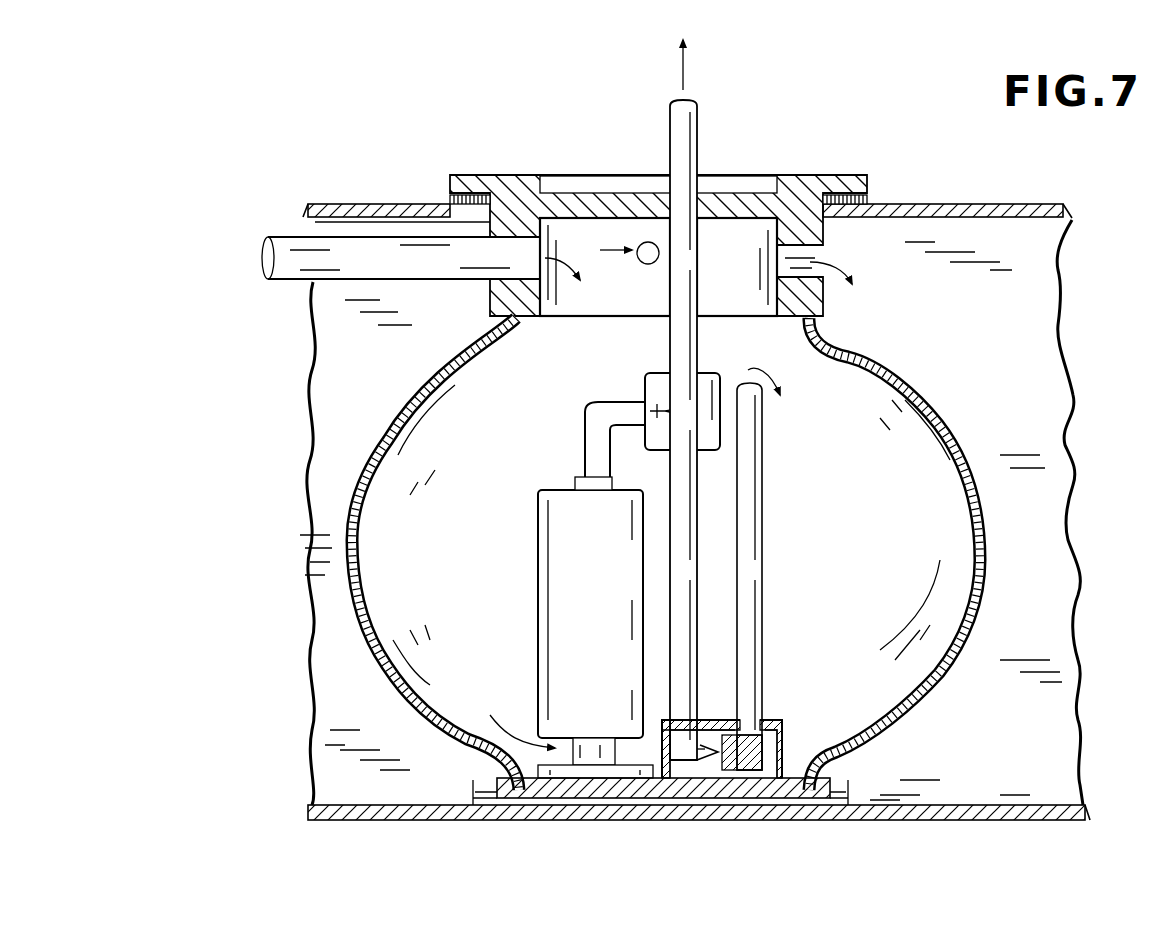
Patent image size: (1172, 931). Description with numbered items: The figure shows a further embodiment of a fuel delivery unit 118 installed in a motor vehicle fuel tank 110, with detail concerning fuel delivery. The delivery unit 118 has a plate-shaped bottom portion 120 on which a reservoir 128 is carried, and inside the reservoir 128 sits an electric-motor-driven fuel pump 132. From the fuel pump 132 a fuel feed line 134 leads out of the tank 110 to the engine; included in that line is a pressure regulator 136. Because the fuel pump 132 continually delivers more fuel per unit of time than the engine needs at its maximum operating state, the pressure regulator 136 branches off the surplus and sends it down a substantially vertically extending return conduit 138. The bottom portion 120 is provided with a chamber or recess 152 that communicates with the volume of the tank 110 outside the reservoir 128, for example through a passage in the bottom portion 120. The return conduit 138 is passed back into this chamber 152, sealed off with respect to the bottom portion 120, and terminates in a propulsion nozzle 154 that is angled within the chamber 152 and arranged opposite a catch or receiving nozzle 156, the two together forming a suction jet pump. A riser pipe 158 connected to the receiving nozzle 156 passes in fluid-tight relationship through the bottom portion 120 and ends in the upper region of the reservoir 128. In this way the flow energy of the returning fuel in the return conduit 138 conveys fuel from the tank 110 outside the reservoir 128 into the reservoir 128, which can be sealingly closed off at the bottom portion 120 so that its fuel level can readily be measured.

The tank 110 is at (365, 196).
The delivery unit 118 is at (378, 690).
The bottom portion 120 is at (575, 783).
The reservoir 128 is at (538, 418).
The fuel pump 132 is at (548, 572).
The fuel feed line 134 is at (683, 135).
The pressure regulator 136 is at (657, 381).
The return conduit 138 is at (695, 612).
The chamber or recess 152 is at (773, 745).
The propulsion nozzle 154 is at (710, 757).
The catch or receiving nozzle 156 is at (738, 758).
The riser pipe 158 is at (752, 525).